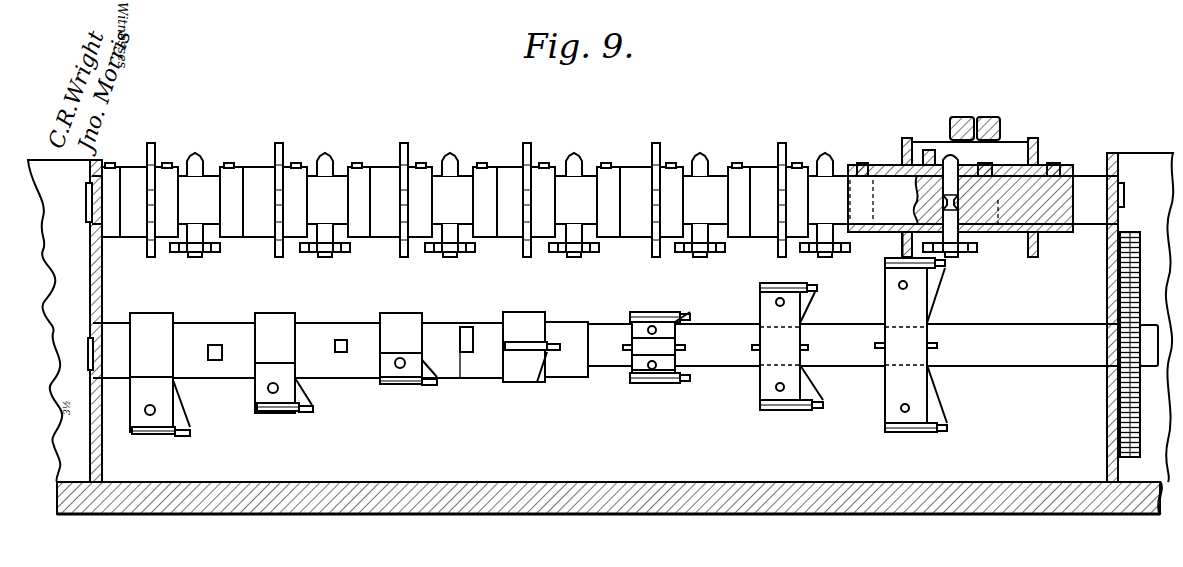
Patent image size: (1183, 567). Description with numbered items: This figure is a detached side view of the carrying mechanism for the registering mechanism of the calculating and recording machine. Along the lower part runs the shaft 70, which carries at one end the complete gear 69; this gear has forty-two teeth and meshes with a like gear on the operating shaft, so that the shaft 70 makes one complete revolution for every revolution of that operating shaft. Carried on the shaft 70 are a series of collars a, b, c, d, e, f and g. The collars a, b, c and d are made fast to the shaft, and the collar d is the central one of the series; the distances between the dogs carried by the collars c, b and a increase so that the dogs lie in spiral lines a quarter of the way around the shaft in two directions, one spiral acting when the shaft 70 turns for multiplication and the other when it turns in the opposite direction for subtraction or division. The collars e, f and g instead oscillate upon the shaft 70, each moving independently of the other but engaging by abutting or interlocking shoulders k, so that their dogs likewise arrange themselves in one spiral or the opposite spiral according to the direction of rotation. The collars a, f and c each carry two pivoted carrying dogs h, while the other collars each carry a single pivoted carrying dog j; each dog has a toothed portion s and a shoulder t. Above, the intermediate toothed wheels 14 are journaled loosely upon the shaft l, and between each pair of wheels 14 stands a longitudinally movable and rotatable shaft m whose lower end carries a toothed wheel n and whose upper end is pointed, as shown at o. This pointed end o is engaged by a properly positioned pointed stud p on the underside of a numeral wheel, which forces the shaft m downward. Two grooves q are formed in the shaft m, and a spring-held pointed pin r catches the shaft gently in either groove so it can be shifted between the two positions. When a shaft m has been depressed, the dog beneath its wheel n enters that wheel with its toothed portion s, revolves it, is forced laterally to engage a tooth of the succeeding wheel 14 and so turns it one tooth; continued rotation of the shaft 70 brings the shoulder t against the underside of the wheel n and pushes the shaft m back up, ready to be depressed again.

The intermediate toothed wheel 14 is at (1047, 135).
The pointed end of shaft m o is at (965, 140).
The longitudinally movable and rotatable shaft m is at (975, 155).
The toothed wheel n is at (985, 262).
The pointed stud p is at (915, 173).
The groove q is at (958, 197).
The spring-held pointed pin r is at (907, 244).
The shaft l is at (1121, 185).
The complete gear 69 is at (1145, 258).
The shaft 70 is at (1020, 328).
The collar a is at (927, 326).
The collar b is at (800, 324).
The collar c is at (632, 322).
The collar d is at (545, 318).
The collar e is at (422, 318).
The collar f is at (295, 318).
The collar g is at (175, 322).
The pivoted carrying dog h is at (952, 400).
The pivoted carrying dog j is at (537, 392).
The abutting or interlocking shoulder k is at (472, 313).
The toothed portion s is at (808, 252).
The shoulder t is at (940, 431).